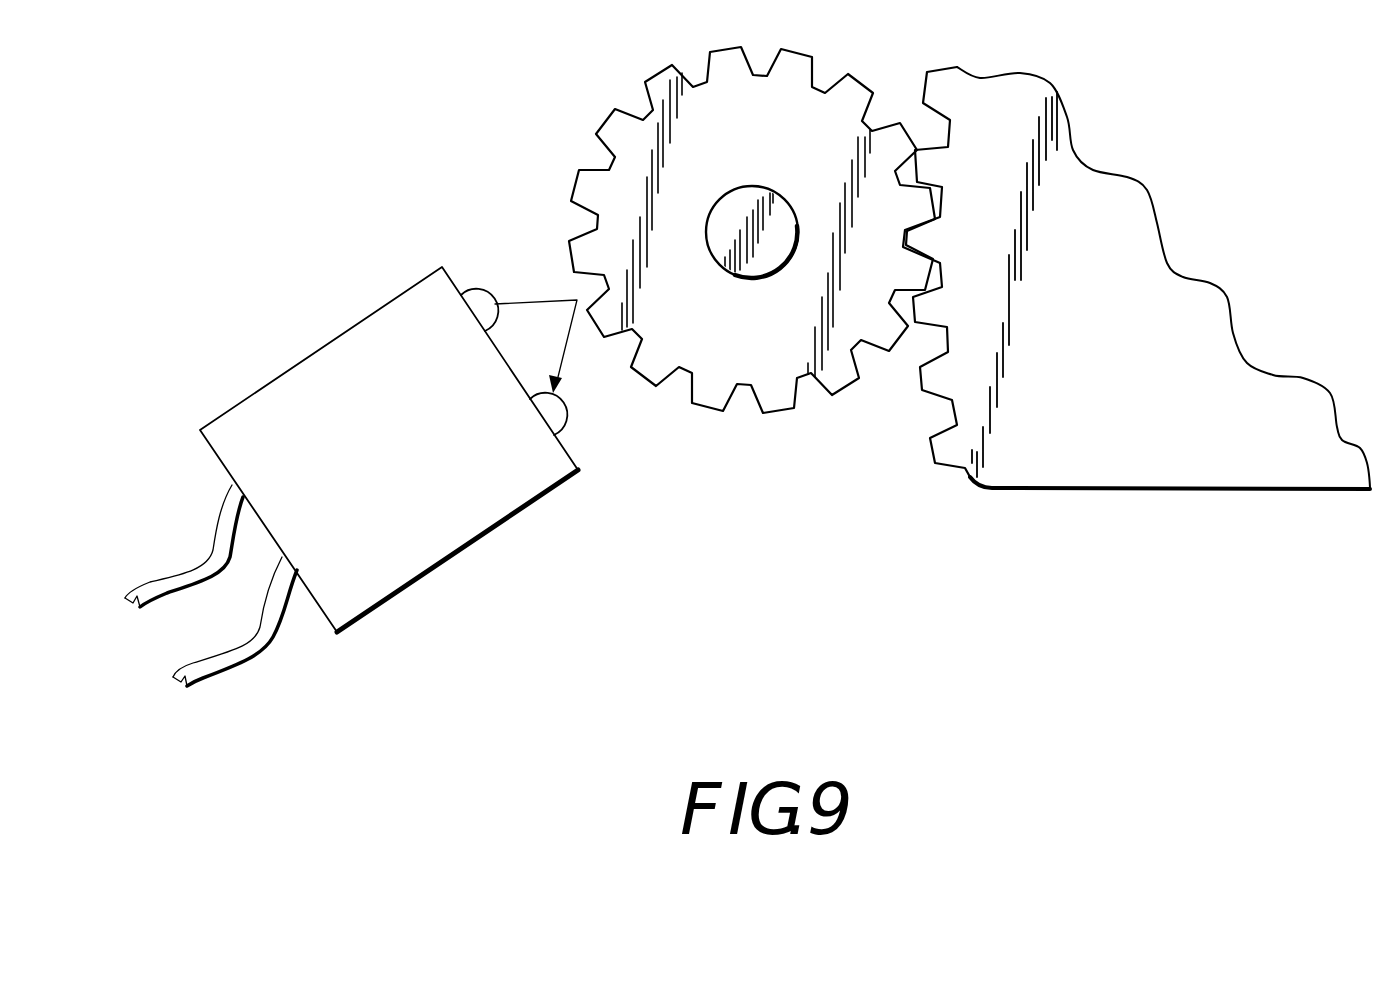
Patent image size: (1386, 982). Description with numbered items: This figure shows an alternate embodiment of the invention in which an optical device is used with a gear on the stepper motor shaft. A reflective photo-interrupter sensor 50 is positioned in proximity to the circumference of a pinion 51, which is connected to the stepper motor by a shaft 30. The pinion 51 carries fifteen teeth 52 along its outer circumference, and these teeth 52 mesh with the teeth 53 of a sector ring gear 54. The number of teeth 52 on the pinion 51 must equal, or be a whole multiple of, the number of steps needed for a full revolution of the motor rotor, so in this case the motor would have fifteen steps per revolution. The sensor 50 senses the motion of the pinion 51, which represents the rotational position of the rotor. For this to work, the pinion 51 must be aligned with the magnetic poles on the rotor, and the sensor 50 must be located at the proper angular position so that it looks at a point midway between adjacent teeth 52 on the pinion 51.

The shaft 30 is at (733, 203).
The reflective photo-interrupter sensor 50 is at (312, 352).
The pinion 51 is at (752, 310).
The teeth 52 is at (777, 412).
The teeth 53 is at (952, 467).
The sector ring gear 54 is at (1136, 324).